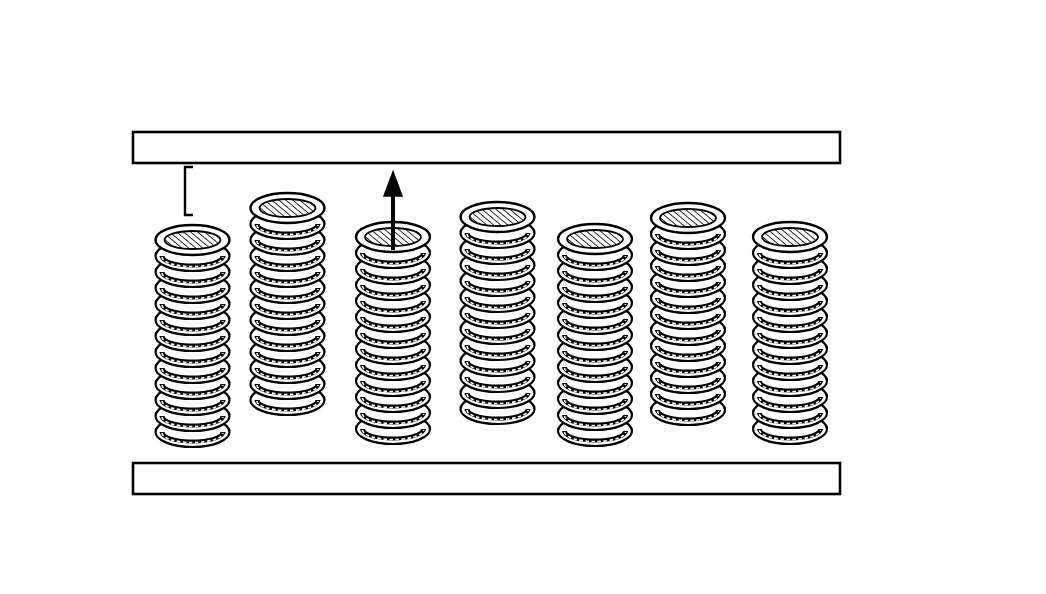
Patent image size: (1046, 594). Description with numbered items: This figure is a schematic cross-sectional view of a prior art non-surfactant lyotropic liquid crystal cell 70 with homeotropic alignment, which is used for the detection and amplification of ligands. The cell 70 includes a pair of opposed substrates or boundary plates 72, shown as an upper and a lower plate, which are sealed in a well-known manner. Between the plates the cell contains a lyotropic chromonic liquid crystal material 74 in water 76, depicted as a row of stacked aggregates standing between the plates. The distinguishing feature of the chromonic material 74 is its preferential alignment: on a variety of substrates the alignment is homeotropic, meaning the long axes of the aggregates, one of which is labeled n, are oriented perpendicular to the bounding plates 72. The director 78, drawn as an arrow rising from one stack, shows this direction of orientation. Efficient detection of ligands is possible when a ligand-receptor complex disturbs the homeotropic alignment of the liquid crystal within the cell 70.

The non-surfactant lyotropic liquid crystal cell 70 is at (90, 147).
The boundary plates 72 is at (840, 151).
The lyotropic chromonic liquid crystal material 74 is at (151, 322).
The water 76 is at (183, 191).
The director 78 is at (405, 187).